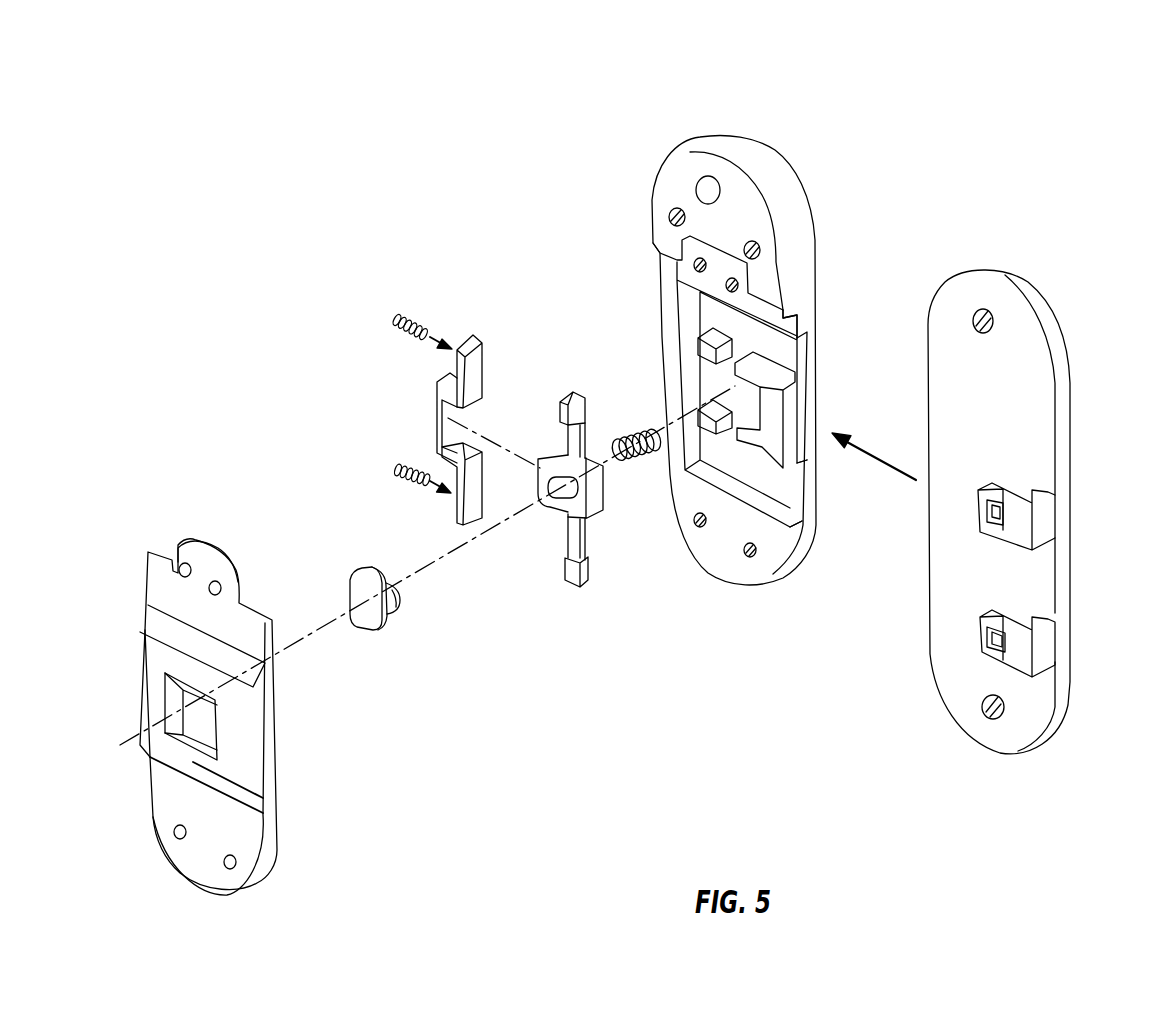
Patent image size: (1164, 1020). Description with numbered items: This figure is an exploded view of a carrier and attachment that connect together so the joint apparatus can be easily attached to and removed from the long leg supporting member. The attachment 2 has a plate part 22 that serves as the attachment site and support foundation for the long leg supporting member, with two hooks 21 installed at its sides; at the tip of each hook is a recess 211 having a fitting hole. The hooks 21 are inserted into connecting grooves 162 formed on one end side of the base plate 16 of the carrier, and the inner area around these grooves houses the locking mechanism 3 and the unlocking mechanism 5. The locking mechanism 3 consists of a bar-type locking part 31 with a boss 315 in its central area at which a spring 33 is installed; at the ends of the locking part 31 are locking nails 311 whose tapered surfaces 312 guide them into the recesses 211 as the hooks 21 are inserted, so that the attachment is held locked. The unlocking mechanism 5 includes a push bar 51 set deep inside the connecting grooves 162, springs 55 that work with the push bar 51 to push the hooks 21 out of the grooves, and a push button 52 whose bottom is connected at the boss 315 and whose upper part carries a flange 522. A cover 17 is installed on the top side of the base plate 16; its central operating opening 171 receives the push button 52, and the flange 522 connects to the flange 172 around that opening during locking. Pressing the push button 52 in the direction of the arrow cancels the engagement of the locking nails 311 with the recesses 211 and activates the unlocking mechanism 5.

The attachment 2 is at (996, 465).
The hook 21 is at (989, 501).
The recess 211 is at (981, 517).
The plate part 22 is at (1063, 386).
The locking mechanism 3 is at (565, 559).
The locking part 31 is at (559, 523).
The locking nail 311 is at (565, 585).
The tapered surface 312 is at (575, 570).
The boss 315 is at (599, 503).
The spring 33 is at (625, 425).
The unlocking mechanism 5 is at (365, 491).
The push bar 51 is at (427, 427).
The push button 52 is at (364, 606).
The flange 522 is at (383, 633).
The spring 55 is at (397, 314).
The base plate 16 is at (768, 340).
The connecting groove 162 is at (802, 340).
The cover 17 is at (243, 669).
The operating opening 171 is at (207, 720).
The flange 172 is at (197, 764).